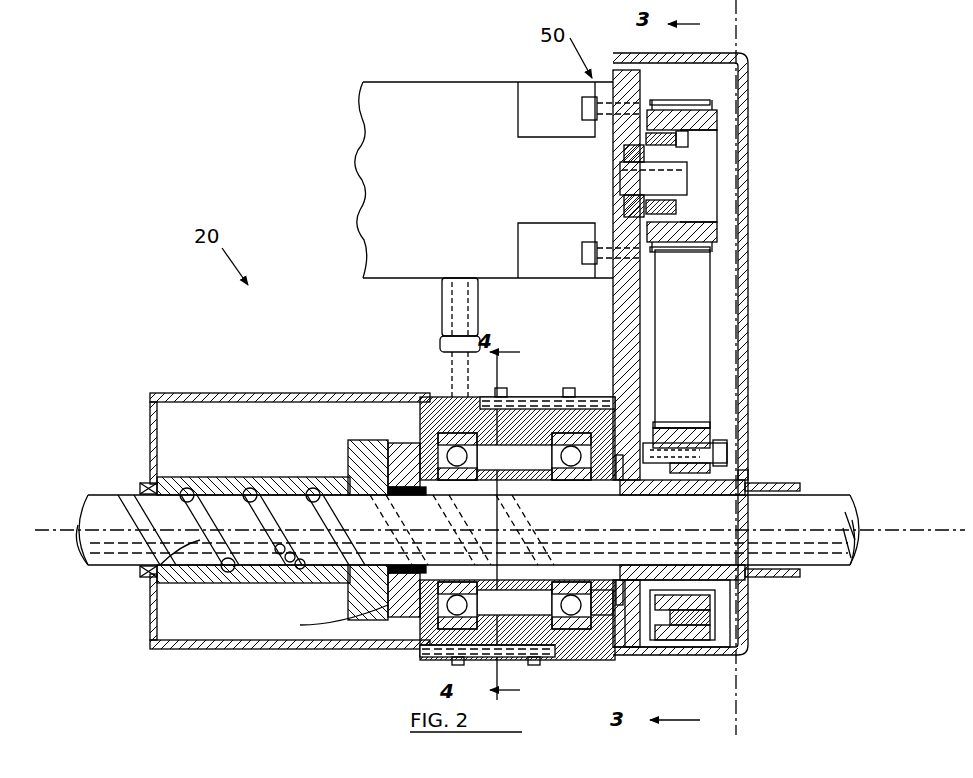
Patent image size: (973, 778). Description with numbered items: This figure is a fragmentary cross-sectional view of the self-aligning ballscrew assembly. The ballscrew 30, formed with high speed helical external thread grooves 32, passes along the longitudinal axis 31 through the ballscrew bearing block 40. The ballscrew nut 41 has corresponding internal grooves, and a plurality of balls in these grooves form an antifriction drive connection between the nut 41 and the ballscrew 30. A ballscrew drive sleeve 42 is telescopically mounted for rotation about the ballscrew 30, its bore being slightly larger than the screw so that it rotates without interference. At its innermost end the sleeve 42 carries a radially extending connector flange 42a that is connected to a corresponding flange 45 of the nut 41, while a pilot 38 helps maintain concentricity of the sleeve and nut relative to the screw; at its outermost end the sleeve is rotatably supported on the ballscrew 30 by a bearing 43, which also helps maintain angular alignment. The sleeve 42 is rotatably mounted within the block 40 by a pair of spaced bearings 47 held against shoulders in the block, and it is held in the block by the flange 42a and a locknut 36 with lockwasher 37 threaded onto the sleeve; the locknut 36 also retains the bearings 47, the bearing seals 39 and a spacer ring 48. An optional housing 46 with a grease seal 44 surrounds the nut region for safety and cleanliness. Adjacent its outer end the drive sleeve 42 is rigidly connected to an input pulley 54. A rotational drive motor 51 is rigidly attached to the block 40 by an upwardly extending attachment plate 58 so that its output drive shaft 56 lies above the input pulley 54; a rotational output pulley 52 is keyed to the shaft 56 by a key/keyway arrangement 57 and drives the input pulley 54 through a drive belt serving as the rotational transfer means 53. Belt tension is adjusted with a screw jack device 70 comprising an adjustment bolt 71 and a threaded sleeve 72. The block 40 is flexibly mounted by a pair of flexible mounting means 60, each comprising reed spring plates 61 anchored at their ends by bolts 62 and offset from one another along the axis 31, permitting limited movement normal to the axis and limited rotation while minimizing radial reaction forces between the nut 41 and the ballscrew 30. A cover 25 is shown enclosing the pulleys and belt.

The cover housing 25 is at (748, 292).
The ballscrew 30 is at (845, 508).
The longitudinal axis 31 is at (880, 530).
The helical external thread grooves 32 is at (115, 503).
The locknut 36 is at (660, 497).
The lockwasher 37 is at (620, 496).
The pilot 38 is at (318, 625).
The bearing seals 39 is at (613, 440).
The ballscrew bearing block 40 is at (422, 397).
The ballscrew nut 41 is at (198, 477).
The ballscrew drive sleeve 42 is at (750, 470).
The connector flange 42a is at (402, 412).
The bearing 43 is at (800, 487).
The grease seal 44 is at (145, 483).
The flange 45 is at (340, 397).
The housing 46 is at (218, 393).
The bearings 47 is at (440, 612).
The spacer ring 48 is at (560, 622).
The rotational drive motor 51 is at (422, 92).
The rotational output pulley 52 is at (718, 120).
The rotational transfer means 53 is at (698, 332).
The input pulley 54 is at (715, 430).
The output drive shaft 56 is at (687, 178).
The key/keyway arrangement 57 is at (683, 158).
The attachment plate 58 is at (616, 293).
The flexible mounting means 60 is at (547, 388).
The reed spring plates 61 is at (430, 648).
The bolts 62 is at (568, 388).
The screw jack device 70 is at (436, 326).
The adjustment bolt 71 is at (462, 345).
The threaded sleeve 72 is at (480, 300).